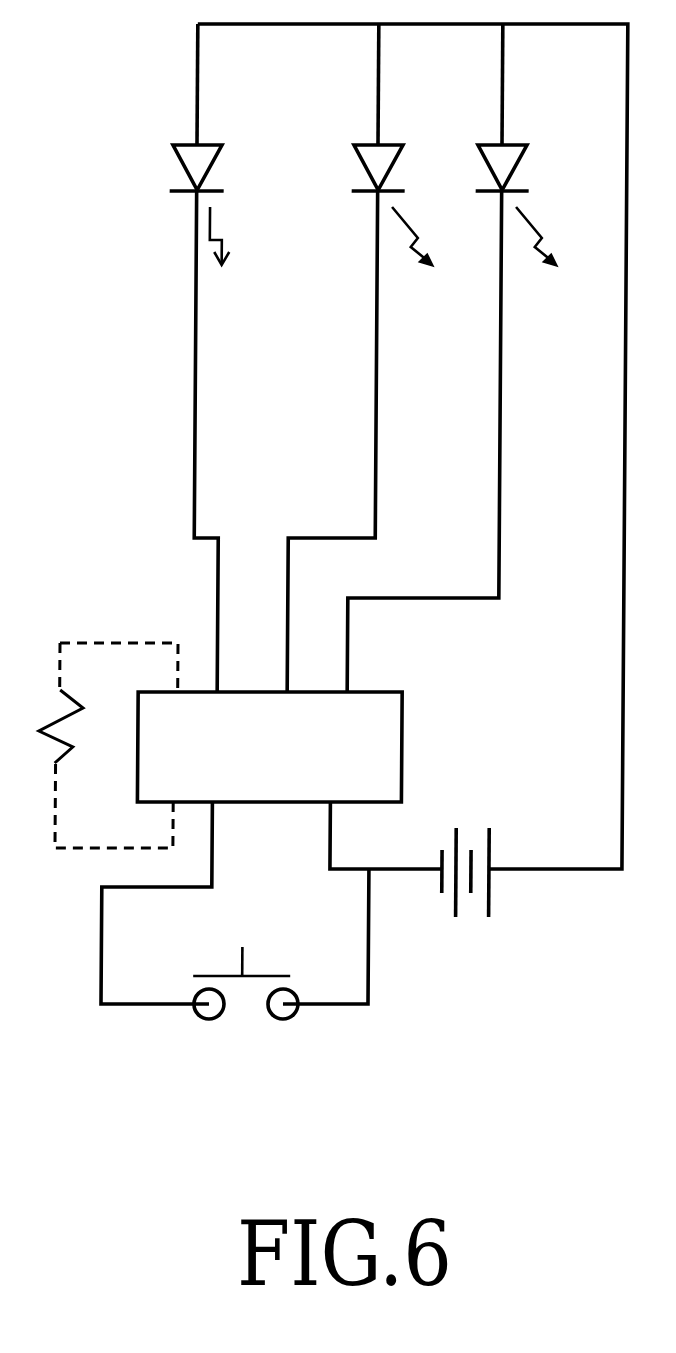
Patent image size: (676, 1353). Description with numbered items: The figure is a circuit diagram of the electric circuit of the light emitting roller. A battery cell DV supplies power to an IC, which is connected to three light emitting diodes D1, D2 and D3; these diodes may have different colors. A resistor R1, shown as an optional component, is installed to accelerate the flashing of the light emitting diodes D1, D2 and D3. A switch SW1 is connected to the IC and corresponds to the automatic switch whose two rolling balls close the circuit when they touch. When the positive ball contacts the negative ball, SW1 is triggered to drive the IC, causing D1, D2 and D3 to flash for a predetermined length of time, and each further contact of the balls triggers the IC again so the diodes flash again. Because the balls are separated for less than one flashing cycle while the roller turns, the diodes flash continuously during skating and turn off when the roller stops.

The light emitting diode D1 is at (207, 182).
The light emitting diode D2 is at (392, 181).
The light emitting diode D3 is at (517, 182).
The element IC is at (269, 747).
The resistor R1 is at (108, 745).
The switch SW1 is at (243, 1011).
The battery cell DV is at (478, 898).